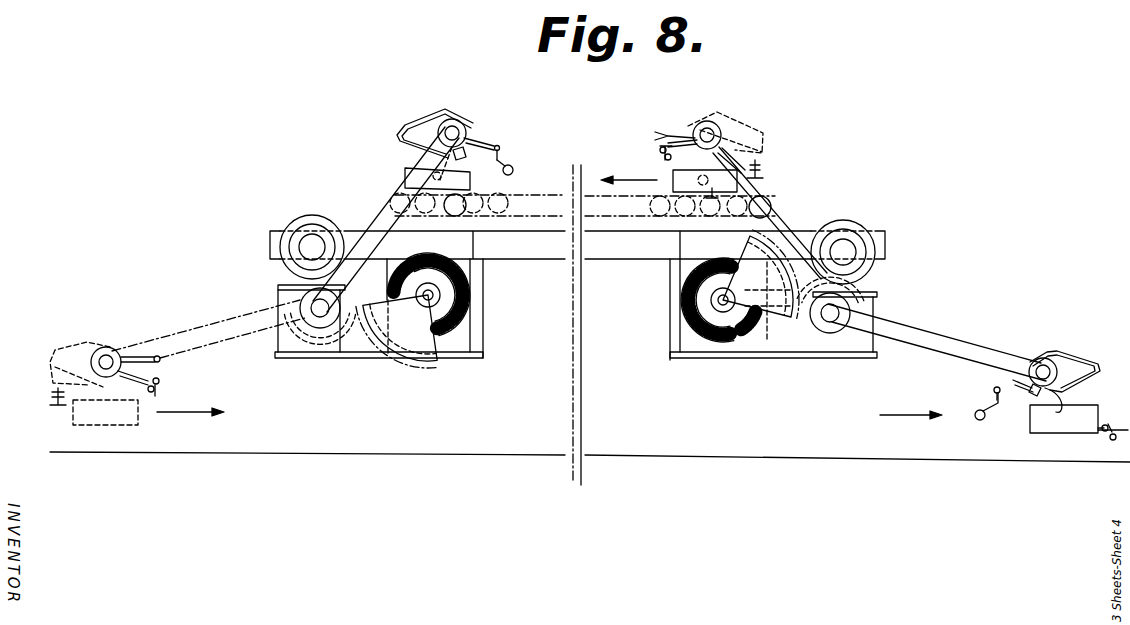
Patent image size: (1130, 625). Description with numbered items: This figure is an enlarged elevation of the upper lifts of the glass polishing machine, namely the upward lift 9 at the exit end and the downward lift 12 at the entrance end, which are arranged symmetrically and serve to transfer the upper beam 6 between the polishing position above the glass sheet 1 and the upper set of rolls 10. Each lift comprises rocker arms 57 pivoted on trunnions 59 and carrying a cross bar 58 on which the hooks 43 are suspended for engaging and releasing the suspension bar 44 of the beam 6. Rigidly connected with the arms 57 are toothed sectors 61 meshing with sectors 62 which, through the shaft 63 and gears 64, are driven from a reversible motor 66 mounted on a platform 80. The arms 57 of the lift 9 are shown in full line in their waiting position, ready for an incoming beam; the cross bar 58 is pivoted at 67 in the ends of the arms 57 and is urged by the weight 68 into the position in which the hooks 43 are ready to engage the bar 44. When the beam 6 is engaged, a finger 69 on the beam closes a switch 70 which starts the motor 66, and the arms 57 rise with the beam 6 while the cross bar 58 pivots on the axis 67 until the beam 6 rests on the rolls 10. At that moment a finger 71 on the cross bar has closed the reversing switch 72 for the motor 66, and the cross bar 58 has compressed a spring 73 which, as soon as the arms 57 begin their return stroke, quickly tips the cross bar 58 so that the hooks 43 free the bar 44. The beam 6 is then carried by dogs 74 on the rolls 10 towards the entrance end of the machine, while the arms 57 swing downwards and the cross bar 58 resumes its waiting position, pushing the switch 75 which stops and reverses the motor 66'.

The glass sheet 1 is at (441, 455).
The upper beam 6 is at (1040, 430).
The upward lift 9 is at (946, 367).
The upper set of rolls 10 is at (503, 202).
The downward lift 12 is at (208, 329).
The hooks 43 is at (412, 176).
The suspension bar 44 is at (1028, 420).
The rocker arms 57 is at (372, 218).
The cross bar 58 is at (418, 125).
The trunnions 59 is at (313, 305).
The toothed sectors 61 is at (330, 345).
The sectors 62 is at (397, 357).
The shaft 63 is at (437, 297).
The gears 64 is at (406, 264).
The reversible motor 66 is at (858, 239).
The reversible motor 66' is at (301, 234).
The pivot axis 67 is at (455, 128).
The weight 68 is at (478, 146).
The finger 69 is at (1104, 440).
The switch 70 is at (1112, 424).
The finger 71 is at (163, 383).
The reversing switch 72 is at (656, 152).
The spring 73 is at (58, 406).
The dogs 74 is at (752, 180).
The switch 75 is at (512, 167).
The platform 80 is at (463, 357).